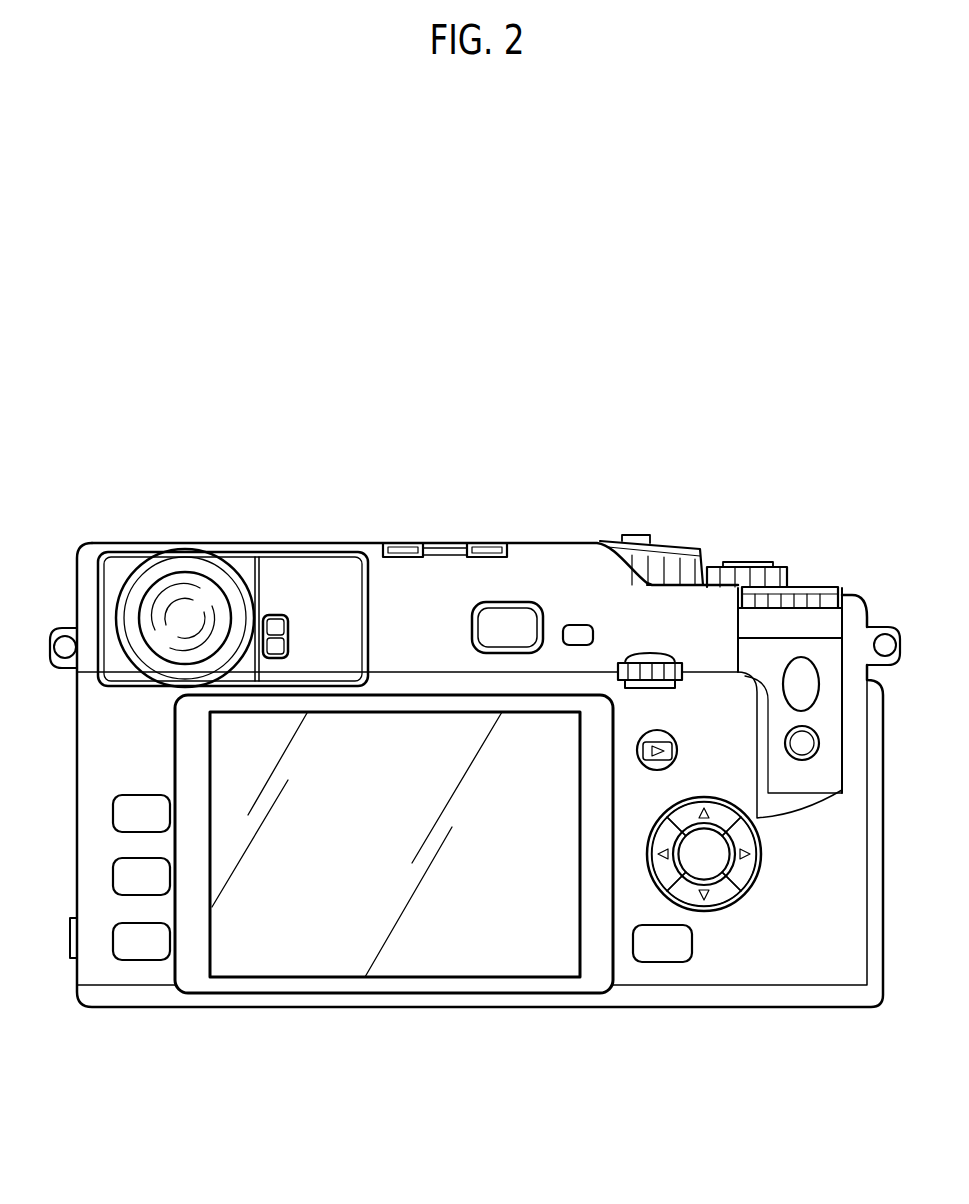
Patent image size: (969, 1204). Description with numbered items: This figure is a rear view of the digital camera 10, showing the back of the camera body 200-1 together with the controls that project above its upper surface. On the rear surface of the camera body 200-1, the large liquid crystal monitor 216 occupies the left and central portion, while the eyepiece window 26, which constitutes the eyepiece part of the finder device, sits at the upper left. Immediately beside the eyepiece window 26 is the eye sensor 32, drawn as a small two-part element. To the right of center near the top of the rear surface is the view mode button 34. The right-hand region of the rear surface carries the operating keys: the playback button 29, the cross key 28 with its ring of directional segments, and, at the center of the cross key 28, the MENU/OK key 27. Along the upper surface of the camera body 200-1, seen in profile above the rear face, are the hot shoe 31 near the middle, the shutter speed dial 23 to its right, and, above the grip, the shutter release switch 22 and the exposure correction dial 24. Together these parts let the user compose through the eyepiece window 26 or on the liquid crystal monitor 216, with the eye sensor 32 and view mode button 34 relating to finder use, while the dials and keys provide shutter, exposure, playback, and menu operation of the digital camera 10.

The digital camera 10 is at (718, 437).
The camera body 200-1 is at (545, 532).
The shutter release switch 22 is at (749, 565).
The shutter speed dial 23 is at (653, 550).
The exposure correction dial 24 is at (807, 588).
The eyepiece window 26 is at (172, 588).
The MENU/OK key 27 is at (710, 872).
The cross key 28 is at (745, 870).
The playback button 29 is at (677, 750).
The hot shoe 31 is at (448, 548).
The eye sensor 32 is at (278, 623).
The view mode button 34 is at (505, 618).
The liquid crystal monitor 216 is at (288, 965).